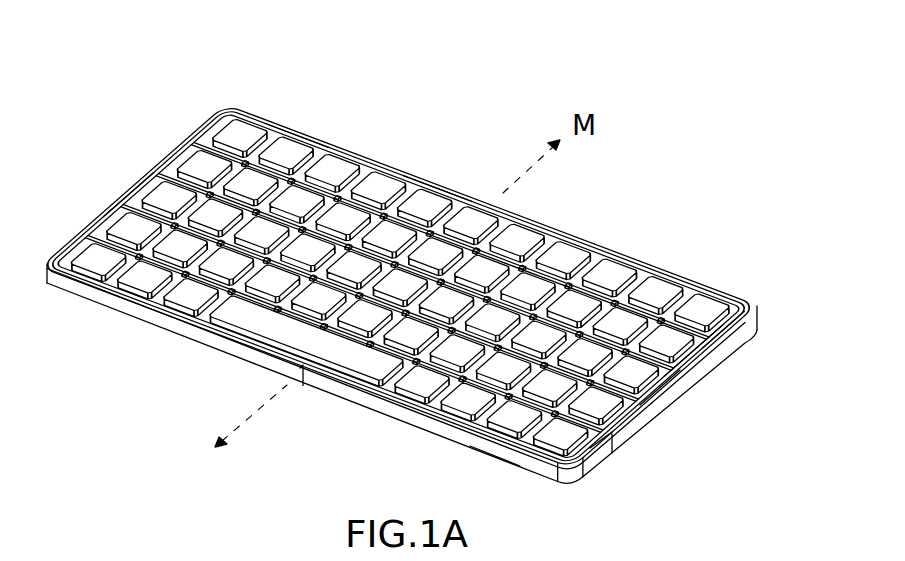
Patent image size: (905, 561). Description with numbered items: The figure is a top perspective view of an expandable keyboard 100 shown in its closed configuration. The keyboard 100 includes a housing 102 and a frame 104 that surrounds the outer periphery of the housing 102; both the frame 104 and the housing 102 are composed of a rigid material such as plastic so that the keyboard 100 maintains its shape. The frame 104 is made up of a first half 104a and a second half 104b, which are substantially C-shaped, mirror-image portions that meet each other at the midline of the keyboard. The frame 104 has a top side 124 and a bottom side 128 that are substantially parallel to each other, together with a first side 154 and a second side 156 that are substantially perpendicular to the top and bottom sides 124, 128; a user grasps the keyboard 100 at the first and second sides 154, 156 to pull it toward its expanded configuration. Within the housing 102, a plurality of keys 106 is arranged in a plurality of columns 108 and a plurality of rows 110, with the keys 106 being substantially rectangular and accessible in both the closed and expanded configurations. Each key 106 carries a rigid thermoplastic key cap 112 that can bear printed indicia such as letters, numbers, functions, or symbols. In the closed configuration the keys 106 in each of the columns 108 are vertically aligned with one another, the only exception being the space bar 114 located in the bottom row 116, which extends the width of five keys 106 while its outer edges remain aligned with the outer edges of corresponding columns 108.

The keyboard 100 is at (130, 92).
The housing 102 is at (678, 401).
The frame 104 is at (583, 233).
The first half 104a is at (293, 140).
The second half 104b is at (742, 303).
The keys 106 is at (132, 223).
The columns 108 is at (680, 272).
The rows 110 is at (704, 348).
The key cap 112 is at (132, 292).
The space bar 114 is at (358, 353).
The bottom row 116 is at (612, 447).
The top side 124 is at (430, 178).
The bottom side 128 is at (492, 462).
The first side 154 is at (122, 192).
The second side 156 is at (657, 423).